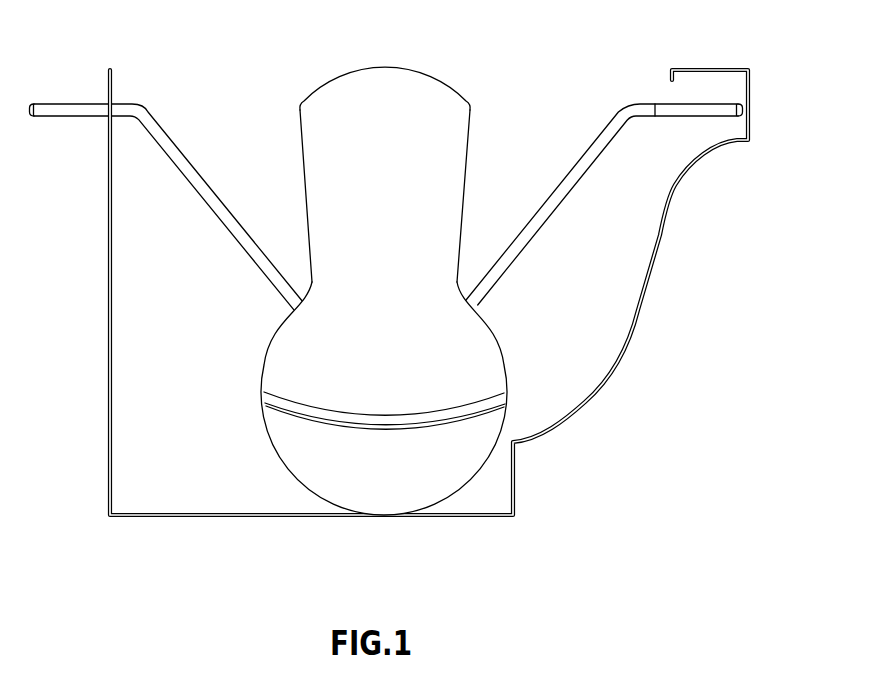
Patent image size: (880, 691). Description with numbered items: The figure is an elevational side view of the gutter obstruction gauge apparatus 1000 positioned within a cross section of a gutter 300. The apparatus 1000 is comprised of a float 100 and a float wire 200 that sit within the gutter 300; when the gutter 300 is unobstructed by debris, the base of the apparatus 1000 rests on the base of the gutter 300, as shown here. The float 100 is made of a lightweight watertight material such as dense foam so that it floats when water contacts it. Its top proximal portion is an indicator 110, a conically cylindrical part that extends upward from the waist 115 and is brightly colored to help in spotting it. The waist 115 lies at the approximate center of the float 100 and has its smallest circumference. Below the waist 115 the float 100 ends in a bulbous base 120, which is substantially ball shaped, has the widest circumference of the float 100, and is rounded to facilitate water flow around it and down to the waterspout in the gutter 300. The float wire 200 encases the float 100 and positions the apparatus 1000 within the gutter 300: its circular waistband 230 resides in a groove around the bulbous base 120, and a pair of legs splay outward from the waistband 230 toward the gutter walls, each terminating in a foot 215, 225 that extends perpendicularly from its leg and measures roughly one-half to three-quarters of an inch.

The gutter obstruction gauge apparatus 1000 is at (429, 264).
The float 100 is at (394, 291).
The indicator 110 is at (364, 112).
The waist 115 is at (364, 196).
The bulbous base 120 is at (268, 447).
The float wire 200 is at (429, 176).
The first foot 215 is at (42, 100).
The second foot 225 is at (704, 110).
The waistband 230 is at (506, 393).
The gutter 300 is at (646, 312).